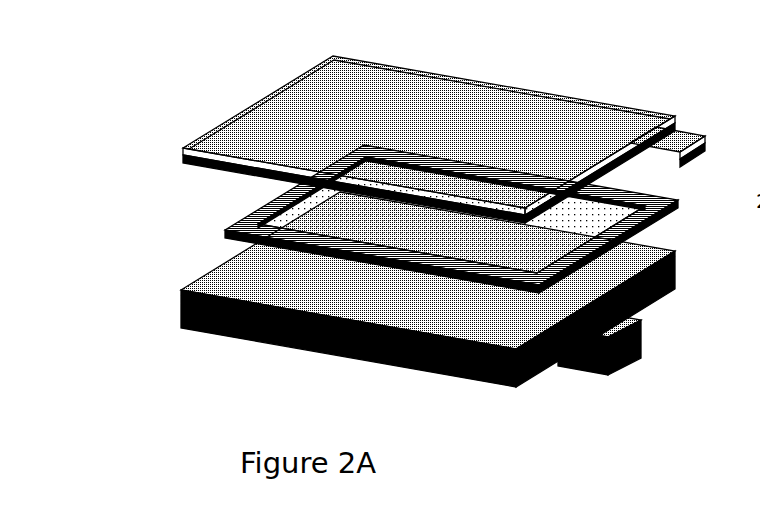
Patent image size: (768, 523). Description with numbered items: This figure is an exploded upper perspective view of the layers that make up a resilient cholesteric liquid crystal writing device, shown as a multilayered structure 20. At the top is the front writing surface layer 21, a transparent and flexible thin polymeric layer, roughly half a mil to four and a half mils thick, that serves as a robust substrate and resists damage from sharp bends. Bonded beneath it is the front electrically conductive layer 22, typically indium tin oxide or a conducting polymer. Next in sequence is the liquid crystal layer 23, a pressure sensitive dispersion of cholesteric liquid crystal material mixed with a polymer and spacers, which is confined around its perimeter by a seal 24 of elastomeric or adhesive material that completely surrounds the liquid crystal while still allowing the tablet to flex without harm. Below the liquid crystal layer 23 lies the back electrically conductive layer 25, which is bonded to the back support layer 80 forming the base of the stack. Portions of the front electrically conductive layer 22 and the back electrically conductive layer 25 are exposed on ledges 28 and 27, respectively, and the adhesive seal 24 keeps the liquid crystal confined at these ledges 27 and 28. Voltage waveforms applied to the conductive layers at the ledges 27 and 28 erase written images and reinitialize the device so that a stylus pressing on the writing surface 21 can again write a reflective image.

The multilayered structure 20 is at (106, 47).
The front writing surface layer 21 is at (423, 135).
The front electrically conductive layer 22 is at (213, 158).
The liquid crystal layer 23 is at (262, 207).
The seal 24 is at (215, 230).
The back electrically conductive layer 25 is at (183, 272).
The ledge 27 is at (612, 367).
The ledge 28 is at (697, 142).
The back support layer 80 is at (401, 318).